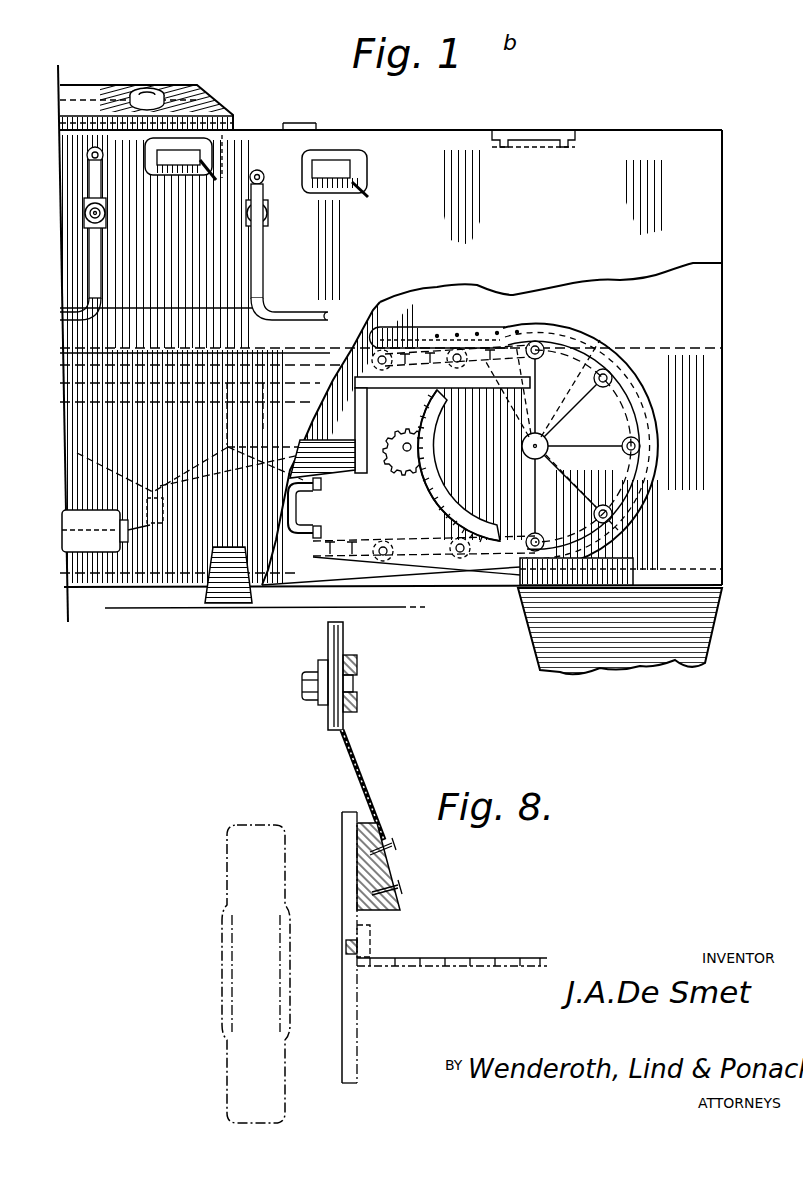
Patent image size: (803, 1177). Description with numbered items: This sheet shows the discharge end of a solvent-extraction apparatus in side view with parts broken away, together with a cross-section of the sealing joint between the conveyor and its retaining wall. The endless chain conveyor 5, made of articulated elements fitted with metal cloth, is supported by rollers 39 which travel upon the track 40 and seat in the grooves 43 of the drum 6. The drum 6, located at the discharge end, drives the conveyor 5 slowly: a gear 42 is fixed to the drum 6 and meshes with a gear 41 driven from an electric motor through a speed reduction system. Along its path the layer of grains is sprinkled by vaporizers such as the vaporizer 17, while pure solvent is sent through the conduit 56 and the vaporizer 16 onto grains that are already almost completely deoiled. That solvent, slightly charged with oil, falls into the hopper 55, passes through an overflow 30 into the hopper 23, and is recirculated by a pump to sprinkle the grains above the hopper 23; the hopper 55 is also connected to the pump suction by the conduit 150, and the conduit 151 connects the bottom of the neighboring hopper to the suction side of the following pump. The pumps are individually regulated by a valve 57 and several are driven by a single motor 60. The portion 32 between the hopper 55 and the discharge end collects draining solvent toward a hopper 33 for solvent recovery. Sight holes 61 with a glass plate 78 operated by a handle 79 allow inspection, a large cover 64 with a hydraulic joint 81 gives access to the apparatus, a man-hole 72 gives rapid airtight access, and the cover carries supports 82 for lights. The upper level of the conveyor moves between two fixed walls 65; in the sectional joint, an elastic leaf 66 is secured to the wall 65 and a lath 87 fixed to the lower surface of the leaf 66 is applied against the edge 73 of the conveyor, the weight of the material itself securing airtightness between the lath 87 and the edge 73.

In FIG. 1B, the endless chain conveyor 5 is at (140, 352).
In FIG. 8, the endless chain conveyor 5 is at (513, 960).
In FIG. 1B, the drum 6 is at (551, 445).
In FIG. 1B, the vaporizer 16 is at (258, 172).
In FIG. 1B, the vaporizer 17 is at (100, 170).
In FIG. 1B, the hopper 23 is at (231, 474).
In FIG. 1B, the overflow 30 is at (224, 446).
In FIG. 1B, the solvent collecting portion 32 is at (398, 390).
In FIG. 1B, the hopper 33 is at (620, 616).
In FIG. 1B, the rollers 39 is at (260, 575).
In FIG. 1B, the track 40 is at (283, 446).
In FIG. 1B, the gear 41 is at (395, 455).
In FIG. 1B, the gear 42 is at (423, 472).
In FIG. 1B, the grooves 43 is at (445, 416).
In FIG. 1B, the hopper 55 is at (322, 459).
In FIG. 1B, the conduit 56 is at (266, 282).
In FIG. 1B, the valve 57 is at (106, 216).
In FIG. 1B, the motor 60 is at (105, 510).
In FIG. 1B, the sight hole 61 is at (345, 168).
In FIG. 1B, the cover 64 is at (205, 88).
In FIG. 1B, the fixed wall 65 is at (655, 445).
In FIG. 8, the fixed wall 65 is at (333, 643).
In FIG. 8, the elastic leaf 66 is at (368, 775).
In FIG. 1B, the man-hole 72 is at (540, 130).
In FIG. 8, the edge of the conveyor 73 is at (342, 850).
In FIG. 1B, the glass plate 78 is at (178, 168).
In FIG. 1B, the handle 79 is at (212, 176).
In FIG. 1B, the hydraulic joint 81 is at (236, 125).
In FIG. 1B, the light support 82 is at (149, 92).
In FIG. 8, the lath 87 is at (400, 872).
In FIG. 1B, the conduit 150 is at (318, 522).
In FIG. 1B, the conduit 151 is at (163, 510).